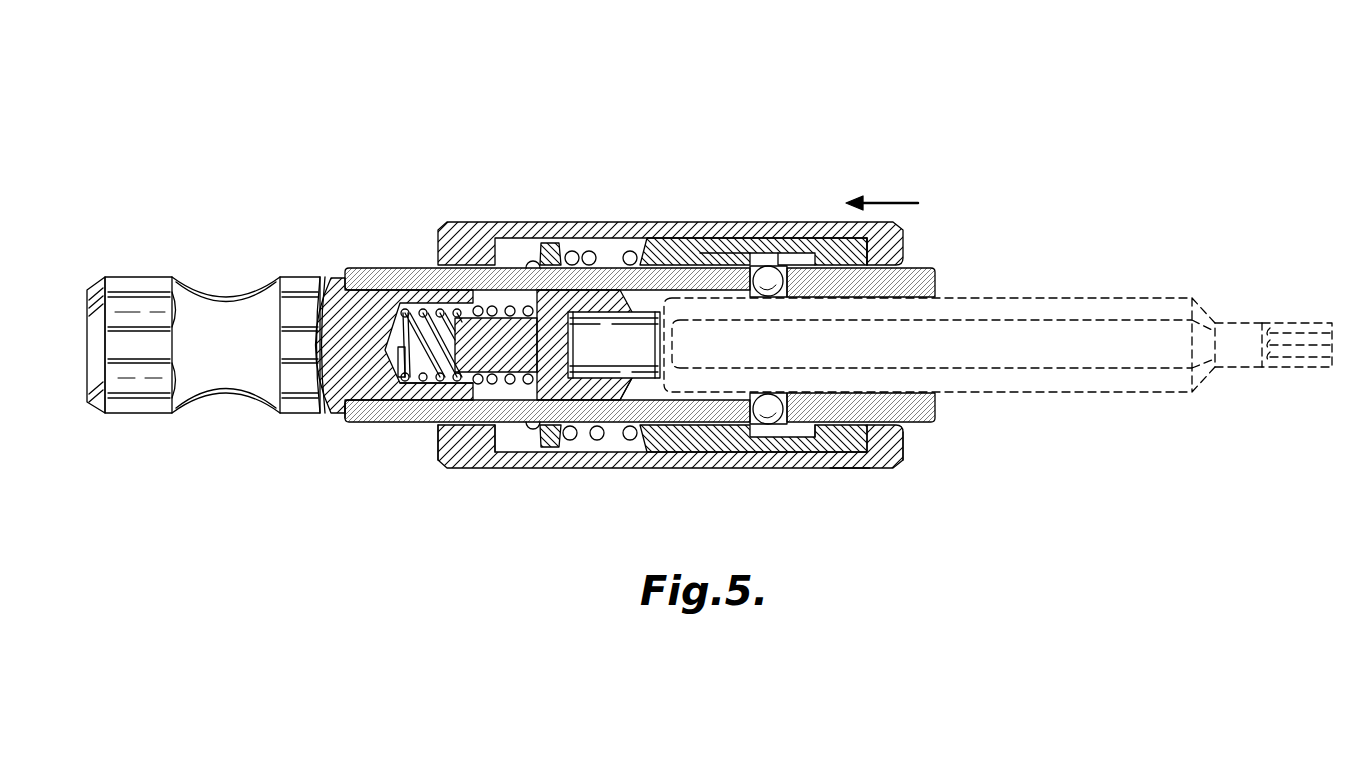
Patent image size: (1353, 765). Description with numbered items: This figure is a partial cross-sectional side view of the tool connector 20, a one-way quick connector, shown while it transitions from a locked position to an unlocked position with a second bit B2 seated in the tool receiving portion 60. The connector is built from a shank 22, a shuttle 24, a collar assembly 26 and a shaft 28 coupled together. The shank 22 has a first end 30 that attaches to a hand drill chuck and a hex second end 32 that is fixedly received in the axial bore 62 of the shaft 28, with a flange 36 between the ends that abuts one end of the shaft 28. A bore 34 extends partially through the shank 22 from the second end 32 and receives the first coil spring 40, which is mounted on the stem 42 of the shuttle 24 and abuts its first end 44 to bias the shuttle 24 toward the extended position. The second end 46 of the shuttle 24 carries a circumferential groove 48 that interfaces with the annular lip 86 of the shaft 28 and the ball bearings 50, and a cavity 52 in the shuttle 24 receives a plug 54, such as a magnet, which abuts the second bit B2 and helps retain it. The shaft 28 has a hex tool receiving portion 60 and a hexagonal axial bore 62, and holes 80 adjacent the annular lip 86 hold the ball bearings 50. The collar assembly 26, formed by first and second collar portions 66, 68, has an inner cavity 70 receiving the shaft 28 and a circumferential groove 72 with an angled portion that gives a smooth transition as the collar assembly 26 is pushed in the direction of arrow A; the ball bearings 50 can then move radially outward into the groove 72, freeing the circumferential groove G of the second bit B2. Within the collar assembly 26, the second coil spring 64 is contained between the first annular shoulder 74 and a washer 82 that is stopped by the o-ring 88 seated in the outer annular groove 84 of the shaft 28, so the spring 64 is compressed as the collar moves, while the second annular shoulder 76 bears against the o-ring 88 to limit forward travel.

The tool connector 20 is at (812, 86).
The shank 22 is at (296, 265).
The shuttle 24 is at (592, 283).
The collar assembly 26 is at (894, 474).
The shaft 28 is at (378, 431).
The first end 30 is at (136, 277).
The second end 32 is at (370, 300).
The bore 34 is at (412, 384).
The flange 36 is at (345, 416).
The first coil spring 40 is at (430, 330).
The stem 42 is at (500, 318).
The first end 44 is at (440, 433).
The second end 46 is at (640, 386).
The circumferential groove 48 is at (645, 401).
The ball bearings 50 is at (766, 268).
The cavity 52 is at (580, 251).
The plug 54 is at (664, 265).
The tool receiving portion 60 is at (907, 318).
The axial bore 62 is at (447, 305).
The second coil spring 64 is at (590, 441).
The first collar portion 66 is at (905, 450).
The second collar portion 68 is at (850, 470).
The inner cavity 70 is at (872, 270).
The circumferential groove 72 is at (797, 254).
The first annular shoulder 74 is at (621, 441).
The second annular shoulder 76 is at (518, 426).
The holes 80 is at (760, 428).
The washer 82 is at (545, 246).
The outer annular groove 84 is at (530, 433).
The annular lip 86 is at (728, 282).
The o-ring 88 is at (546, 449).
The arrow A is at (882, 200).
The second bit B2 is at (1120, 300).
The circumferential groove G is at (822, 457).